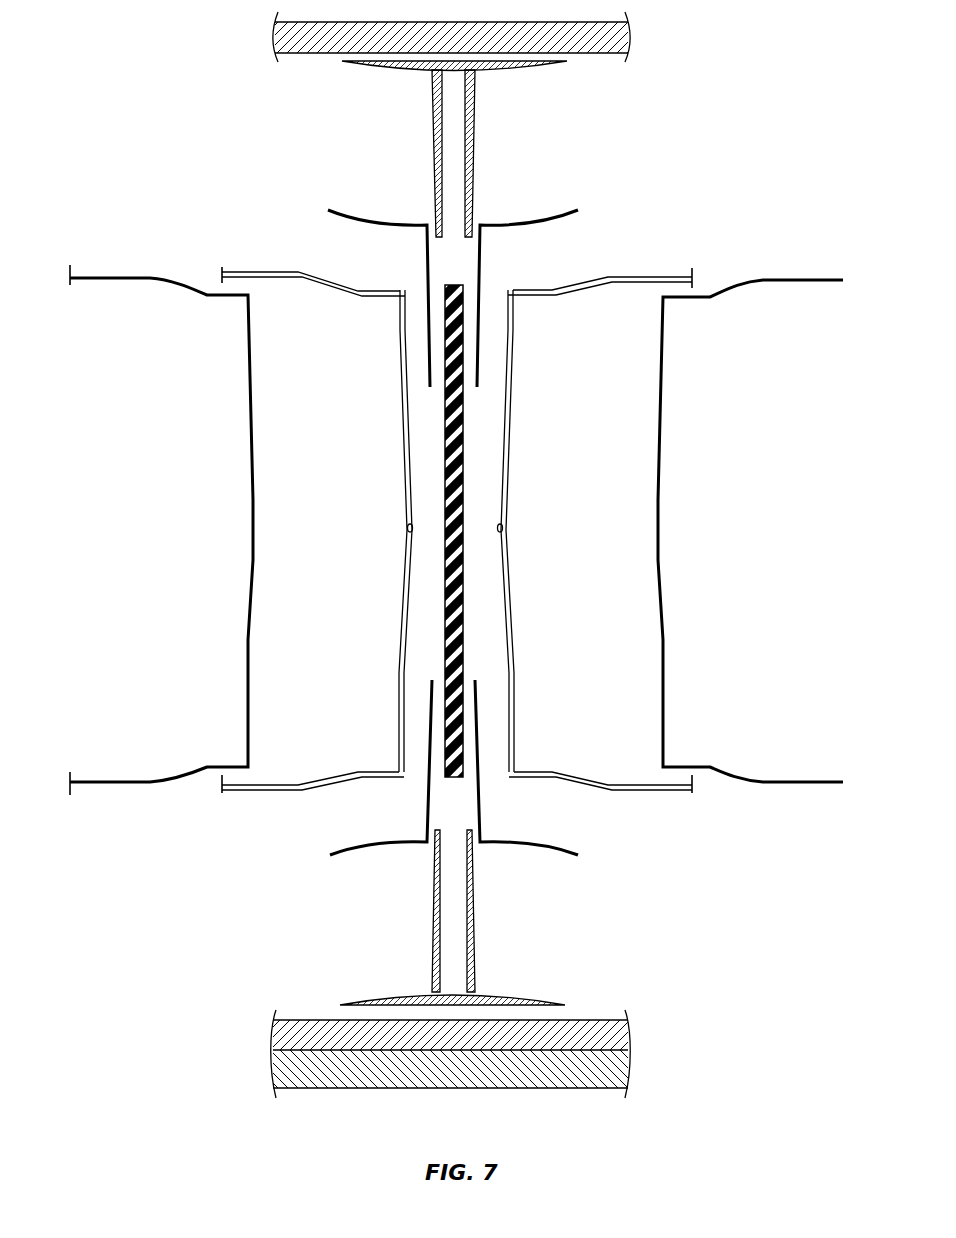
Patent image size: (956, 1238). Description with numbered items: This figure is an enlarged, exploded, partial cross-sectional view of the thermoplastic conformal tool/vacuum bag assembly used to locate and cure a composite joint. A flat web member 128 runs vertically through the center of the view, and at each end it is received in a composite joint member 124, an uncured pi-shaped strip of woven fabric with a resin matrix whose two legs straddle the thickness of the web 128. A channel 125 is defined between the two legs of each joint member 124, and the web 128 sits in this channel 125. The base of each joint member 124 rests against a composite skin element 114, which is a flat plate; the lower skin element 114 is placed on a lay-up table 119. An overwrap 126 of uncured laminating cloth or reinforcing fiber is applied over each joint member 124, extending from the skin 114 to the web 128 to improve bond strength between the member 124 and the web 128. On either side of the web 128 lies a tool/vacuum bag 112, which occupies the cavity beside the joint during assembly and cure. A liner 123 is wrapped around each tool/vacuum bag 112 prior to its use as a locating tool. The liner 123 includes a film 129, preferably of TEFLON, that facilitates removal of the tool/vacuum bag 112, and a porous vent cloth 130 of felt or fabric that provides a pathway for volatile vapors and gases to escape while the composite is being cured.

The tool/vacuum bag 112 is at (252, 482).
The composite skin element 114 is at (327, 43).
The lay-up table 119 is at (313, 1078).
The liner 123 is at (262, 268).
The composite joint member 124 is at (433, 113).
The channel 125 is at (457, 150).
The overwrap 126 is at (342, 211).
The web member 128 is at (450, 420).
The film 129 is at (408, 527).
The vent cloth 130 is at (407, 567).